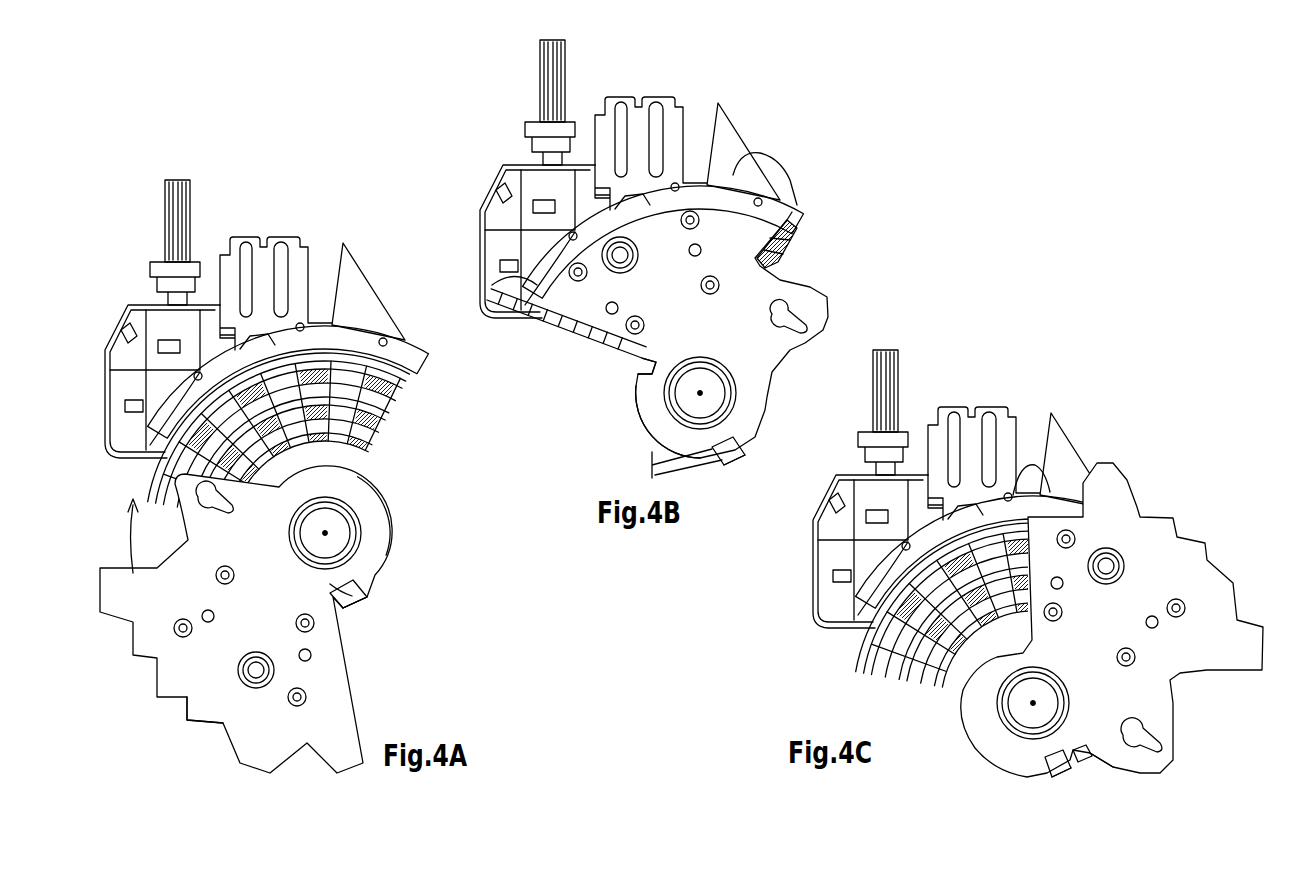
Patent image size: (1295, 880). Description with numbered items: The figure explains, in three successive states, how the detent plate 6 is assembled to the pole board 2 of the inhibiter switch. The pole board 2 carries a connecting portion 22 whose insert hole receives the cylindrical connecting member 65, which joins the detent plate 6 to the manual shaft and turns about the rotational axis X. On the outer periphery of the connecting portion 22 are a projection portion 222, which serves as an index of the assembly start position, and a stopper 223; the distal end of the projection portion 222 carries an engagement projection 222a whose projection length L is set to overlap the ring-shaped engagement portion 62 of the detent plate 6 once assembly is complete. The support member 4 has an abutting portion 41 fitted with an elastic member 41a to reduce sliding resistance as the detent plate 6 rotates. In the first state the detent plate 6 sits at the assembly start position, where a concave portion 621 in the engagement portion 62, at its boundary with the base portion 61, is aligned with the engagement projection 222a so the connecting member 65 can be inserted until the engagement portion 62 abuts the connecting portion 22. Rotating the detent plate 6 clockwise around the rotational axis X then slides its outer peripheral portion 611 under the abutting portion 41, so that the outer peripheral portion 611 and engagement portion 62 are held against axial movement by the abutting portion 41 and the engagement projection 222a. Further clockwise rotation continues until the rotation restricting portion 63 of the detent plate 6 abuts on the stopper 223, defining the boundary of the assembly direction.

In FIG. 4A, the pole board 2 is at (420, 430).
In FIG. 4B, the pole board 2 is at (797, 236).
In FIG. 4C, the pole board 2 is at (845, 633).
In FIG. 4A, the support member 4 is at (285, 228).
In FIG. 4B, the support member 4 is at (672, 92).
In FIG. 4C, the support member 4 is at (994, 400).
In FIG. 4A, the abutting portion 41 is at (318, 325).
In FIG. 4B, the abutting portion 41 is at (684, 180).
In FIG. 4C, the abutting portion 41 is at (1020, 490).
In FIG. 4A, the elastic member 41a is at (370, 328).
In FIG. 4B, the elastic member 41a is at (742, 200).
In FIG. 4C, the elastic member 41a is at (1080, 510).
In FIG. 4A, the connecting portion 22 is at (366, 475).
In FIG. 4B, the connecting portion 22 is at (777, 244).
In FIG. 4C, the connecting portion 22 is at (987, 605).
In FIG. 4A, the projection portion 222 is at (362, 598).
In FIG. 4B, the projection portion 222 is at (745, 452).
In FIG. 4C, the projection portion 222 is at (1050, 775).
In FIG. 4A, the engagement projection 222a is at (352, 610).
In FIG. 4B, the engagement projection 222a is at (725, 466).
In FIG. 4C, the engagement projection 222a is at (1043, 766).
In FIG. 4C, the stopper 223 is at (1082, 763).
In FIG. 4A, the detent plate 6 is at (352, 702).
In FIG. 4B, the detent plate 6 is at (830, 300).
In FIG. 4C, the detent plate 6 is at (1180, 540).
In FIG. 4B, the base portion 61 is at (600, 322).
In FIG. 4A, the outer peripheral portion 611 is at (208, 700).
In FIG. 4B, the outer peripheral portion 611 is at (530, 280).
In FIG. 4A, the engagement portion 62 is at (372, 510).
In FIG. 4B, the engagement portion 62 is at (653, 420).
In FIG. 4A, the concave portion 621 is at (330, 584).
In FIG. 4B, the concave portion 621 is at (652, 362).
In FIG. 4C, the rotation restricting portion 63 is at (1100, 757).
In FIG. 4A, the connecting member 65 is at (291, 525).
In FIG. 4B, the connecting member 65 is at (722, 372).
In FIG. 4C, the connecting member 65 is at (1070, 703).
In FIG. 4A, the rotational axis X is at (330, 533).
In FIG. 4B, the rotational axis X is at (705, 393).
In FIG. 4C, the rotational axis X is at (1028, 703).
In FIG. 4B, the projection length L is at (678, 466).